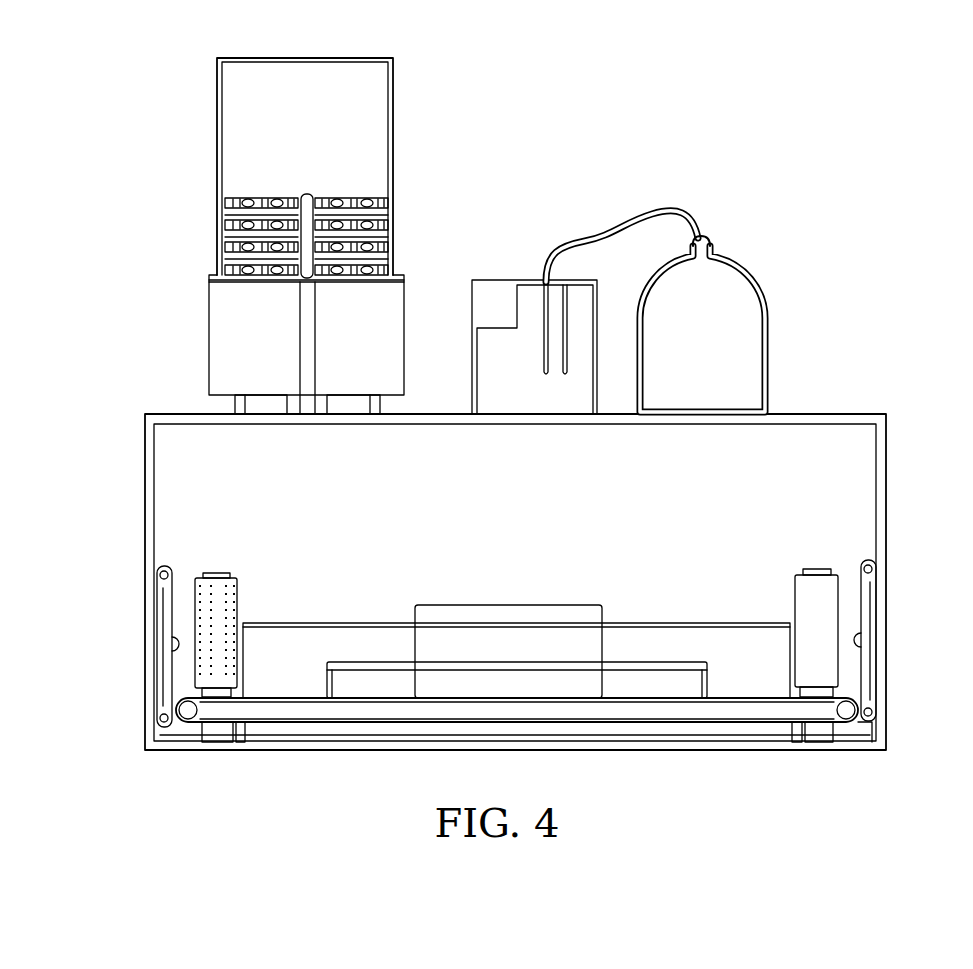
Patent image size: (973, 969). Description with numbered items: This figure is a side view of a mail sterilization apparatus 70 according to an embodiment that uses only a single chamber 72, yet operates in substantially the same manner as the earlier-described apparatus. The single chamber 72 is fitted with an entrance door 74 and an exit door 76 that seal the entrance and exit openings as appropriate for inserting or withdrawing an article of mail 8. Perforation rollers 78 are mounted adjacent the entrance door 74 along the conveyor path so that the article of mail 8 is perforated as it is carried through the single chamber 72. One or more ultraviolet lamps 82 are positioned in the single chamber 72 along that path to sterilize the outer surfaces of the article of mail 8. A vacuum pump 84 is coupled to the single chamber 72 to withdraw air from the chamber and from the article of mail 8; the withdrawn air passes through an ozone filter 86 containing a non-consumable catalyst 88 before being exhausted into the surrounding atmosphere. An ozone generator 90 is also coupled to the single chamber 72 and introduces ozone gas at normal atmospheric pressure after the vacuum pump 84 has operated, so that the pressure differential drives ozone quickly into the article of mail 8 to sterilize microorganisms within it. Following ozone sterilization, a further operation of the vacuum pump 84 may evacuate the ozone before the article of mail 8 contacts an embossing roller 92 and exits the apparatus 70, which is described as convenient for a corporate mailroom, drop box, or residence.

The mail sterilization apparatus 70 is at (567, 101).
The single chamber 72 is at (826, 414).
The entrance door 74 is at (158, 621).
The exit door 76 is at (875, 607).
The perforation rollers 78 is at (219, 608).
The ultraviolet lamps 82 is at (355, 684).
The vacuum pump 84 is at (226, 327).
The ozone filter 86 is at (397, 116).
The non-consumable catalyst 88 is at (248, 197).
The ozone generator 90 is at (488, 292).
The embossing roller 92 is at (806, 596).
The article of mail 8 is at (524, 659).